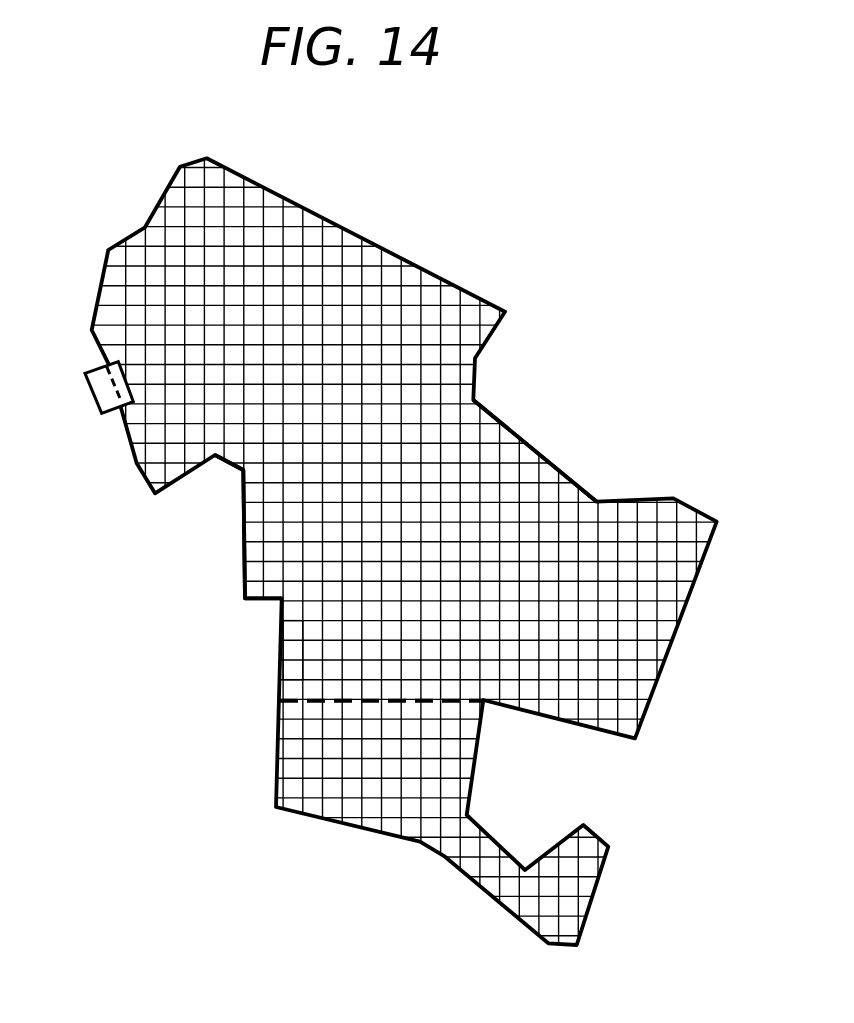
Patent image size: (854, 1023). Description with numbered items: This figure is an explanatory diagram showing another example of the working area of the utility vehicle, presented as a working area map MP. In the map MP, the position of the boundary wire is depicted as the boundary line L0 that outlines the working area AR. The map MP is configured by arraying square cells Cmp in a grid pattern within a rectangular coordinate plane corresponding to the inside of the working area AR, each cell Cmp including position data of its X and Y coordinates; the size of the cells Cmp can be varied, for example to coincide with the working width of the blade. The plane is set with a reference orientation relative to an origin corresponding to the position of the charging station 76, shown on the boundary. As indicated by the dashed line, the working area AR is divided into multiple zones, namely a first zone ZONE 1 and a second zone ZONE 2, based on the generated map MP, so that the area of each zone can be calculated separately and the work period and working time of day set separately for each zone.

The charging station 76 is at (93, 390).
The working area map MP is at (405, 555).
The zone 1 ZONE 1 is at (507, 453).
The zone 2 ZONE 2 is at (295, 748).
The boundary line L0 is at (570, 477).
The working area AR is at (270, 532).
The cells Cmp is at (293, 673).